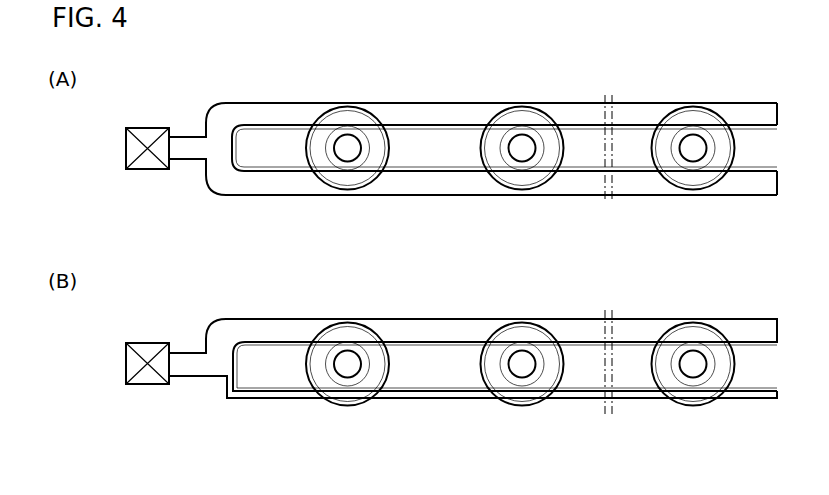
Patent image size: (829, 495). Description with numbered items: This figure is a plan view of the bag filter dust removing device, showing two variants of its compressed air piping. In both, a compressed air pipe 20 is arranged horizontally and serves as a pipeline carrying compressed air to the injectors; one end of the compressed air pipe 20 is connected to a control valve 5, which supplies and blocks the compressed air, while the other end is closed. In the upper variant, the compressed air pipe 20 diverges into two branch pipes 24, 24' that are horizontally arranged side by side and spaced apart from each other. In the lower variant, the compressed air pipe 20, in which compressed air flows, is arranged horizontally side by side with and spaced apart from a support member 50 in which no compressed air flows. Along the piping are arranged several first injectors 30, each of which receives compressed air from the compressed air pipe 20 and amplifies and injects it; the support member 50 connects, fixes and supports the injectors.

The control valve 5 is at (146, 170).
The compressed air pipe 20 is at (185, 170).
The branch pipe 24 is at (501, 80).
The branch pipe 24' is at (501, 219).
The first injector 30 is at (345, 190).
The support member 50 is at (273, 398).